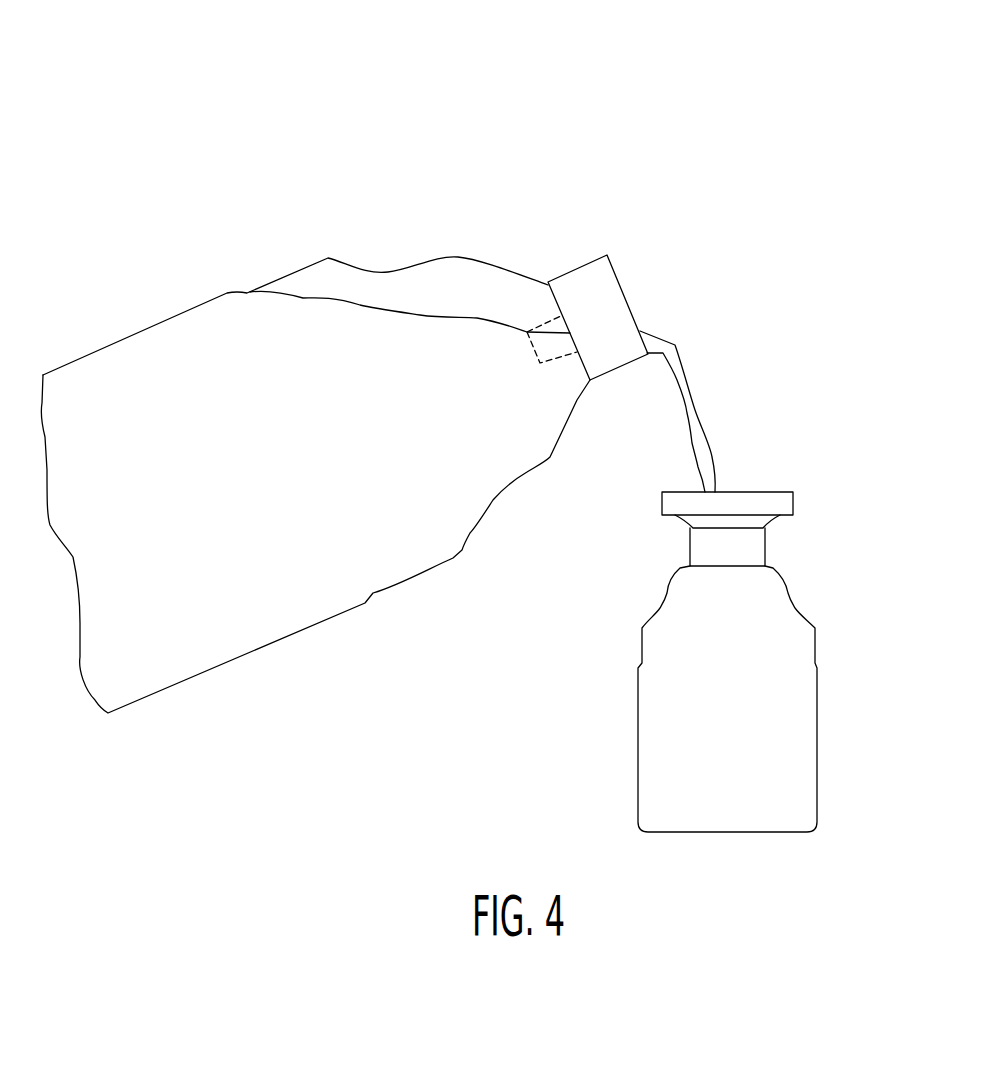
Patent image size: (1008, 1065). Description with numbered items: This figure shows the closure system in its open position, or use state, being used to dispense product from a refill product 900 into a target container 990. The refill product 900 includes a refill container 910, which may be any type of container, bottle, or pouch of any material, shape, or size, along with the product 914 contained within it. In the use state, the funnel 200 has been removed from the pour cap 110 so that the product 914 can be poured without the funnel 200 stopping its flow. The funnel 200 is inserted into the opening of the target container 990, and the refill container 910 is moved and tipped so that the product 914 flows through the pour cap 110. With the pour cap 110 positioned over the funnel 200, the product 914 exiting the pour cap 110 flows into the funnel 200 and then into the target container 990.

The refill product 900 is at (695, 201).
The refill container 910 is at (283, 640).
The pour cap 110 is at (577, 273).
The product 914 is at (693, 377).
The funnel 200 is at (752, 502).
The target container 990 is at (745, 832).